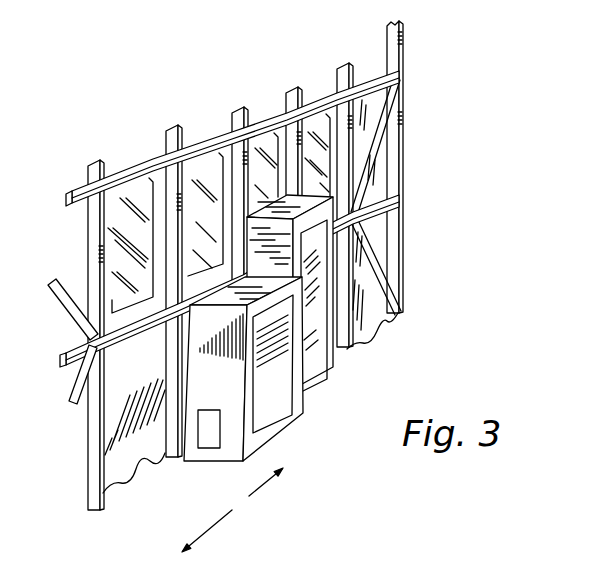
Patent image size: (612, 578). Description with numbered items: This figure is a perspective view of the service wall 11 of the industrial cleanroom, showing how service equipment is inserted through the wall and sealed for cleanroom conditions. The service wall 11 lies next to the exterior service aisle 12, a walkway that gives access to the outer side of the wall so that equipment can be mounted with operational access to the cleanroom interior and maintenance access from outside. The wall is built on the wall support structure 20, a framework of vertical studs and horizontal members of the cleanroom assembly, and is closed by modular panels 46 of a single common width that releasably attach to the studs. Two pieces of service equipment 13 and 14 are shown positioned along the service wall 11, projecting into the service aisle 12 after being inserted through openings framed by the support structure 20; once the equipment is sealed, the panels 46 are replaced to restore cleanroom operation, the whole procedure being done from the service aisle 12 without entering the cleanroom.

The service wall 11 is at (248, 265).
The exterior service aisle 12 is at (232, 510).
The service equipment 13 is at (270, 408).
The service equipment 14 is at (317, 362).
The wall support structure 20 is at (402, 233).
The panels 46 is at (135, 428).